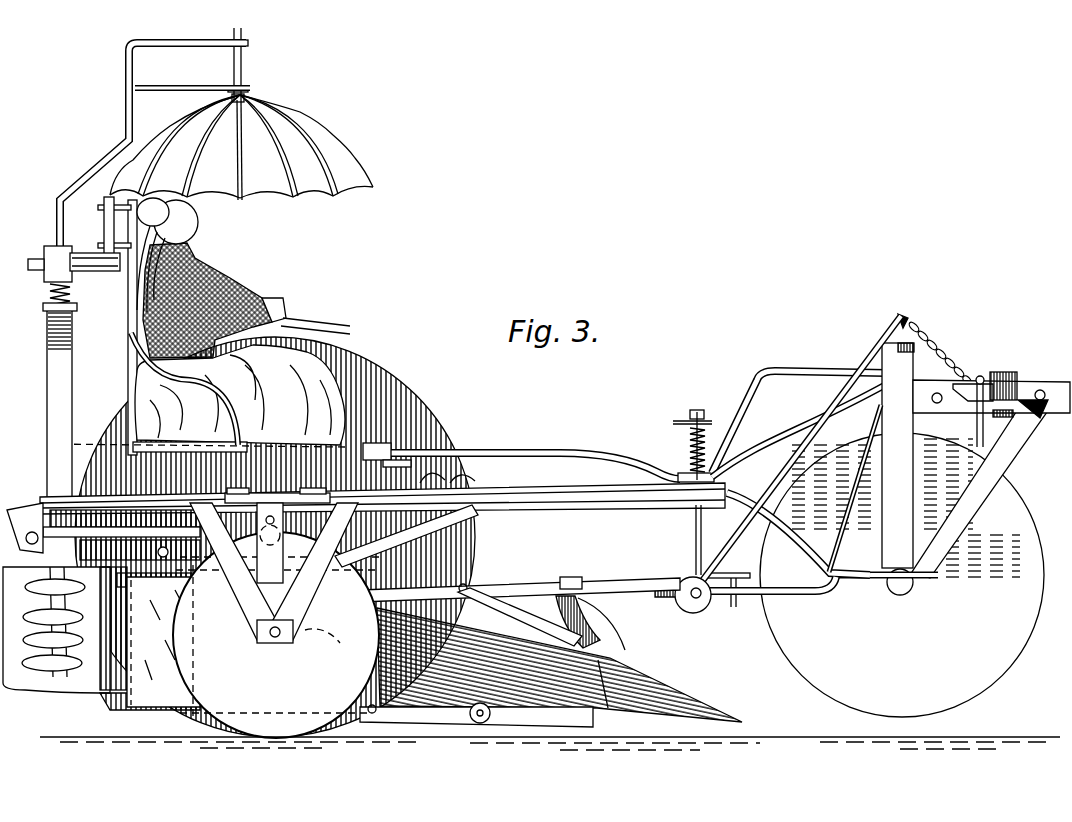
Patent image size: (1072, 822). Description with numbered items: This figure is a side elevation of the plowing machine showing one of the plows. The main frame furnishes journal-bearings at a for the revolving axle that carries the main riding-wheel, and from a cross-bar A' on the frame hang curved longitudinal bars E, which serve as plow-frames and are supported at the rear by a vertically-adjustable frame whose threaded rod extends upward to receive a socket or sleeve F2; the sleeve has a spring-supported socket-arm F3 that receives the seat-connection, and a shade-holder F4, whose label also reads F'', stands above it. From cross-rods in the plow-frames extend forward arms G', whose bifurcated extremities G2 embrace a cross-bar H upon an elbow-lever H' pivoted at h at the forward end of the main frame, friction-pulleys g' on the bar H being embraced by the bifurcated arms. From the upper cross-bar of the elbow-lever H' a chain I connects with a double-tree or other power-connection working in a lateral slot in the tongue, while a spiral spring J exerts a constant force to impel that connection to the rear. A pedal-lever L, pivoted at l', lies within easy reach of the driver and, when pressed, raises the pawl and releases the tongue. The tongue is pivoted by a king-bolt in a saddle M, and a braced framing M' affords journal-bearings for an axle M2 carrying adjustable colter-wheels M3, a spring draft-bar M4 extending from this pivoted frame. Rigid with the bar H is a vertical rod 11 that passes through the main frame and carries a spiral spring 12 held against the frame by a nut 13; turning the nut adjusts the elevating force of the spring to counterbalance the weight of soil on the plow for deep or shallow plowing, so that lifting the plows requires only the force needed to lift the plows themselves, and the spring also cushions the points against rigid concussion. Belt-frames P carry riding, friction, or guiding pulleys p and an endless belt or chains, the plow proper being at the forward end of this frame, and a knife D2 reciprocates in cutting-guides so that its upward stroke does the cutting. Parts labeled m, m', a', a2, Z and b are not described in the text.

The umbrella support frame F'' is at (155, 144).
The shade-holder F4 is at (155, 144).
The socket-arm F3 is at (74, 271).
The socket or sleeve F2 is at (48, 290).
The cross-bar A' is at (521, 453).
The vertical rod 11 is at (690, 412).
The spiral spring 12 is at (689, 434).
The nut 13 is at (703, 412).
The pivot l' is at (689, 465).
The pedal-lever L is at (799, 411).
The chain I is at (940, 353).
The spiral spring J is at (991, 401).
The spring draft-bar M4 is at (799, 430).
The saddle M is at (901, 441).
The curved longitudinal bars E is at (455, 525).
The clamp m is at (231, 485).
The clamp m' is at (308, 483).
The journal-bearings a is at (520, 582).
The arms G' is at (744, 454).
The brace bar a' is at (520, 617).
The bracket a2 is at (585, 594).
The knife D2 is at (559, 659).
The friction-pulleys g' is at (683, 607).
The bifurcated extremities G2 is at (765, 609).
The cross-bar H is at (731, 605).
The elbow-lever H' is at (804, 490).
The braced framing M' is at (979, 490).
The pivot h is at (886, 591).
The axle M2 is at (905, 598).
The colter-wheels M3 is at (902, 575).
The coulter box Z is at (101, 638).
The belt-frames P is at (476, 717).
The pulleys p is at (480, 720).
The bolt b is at (368, 721).